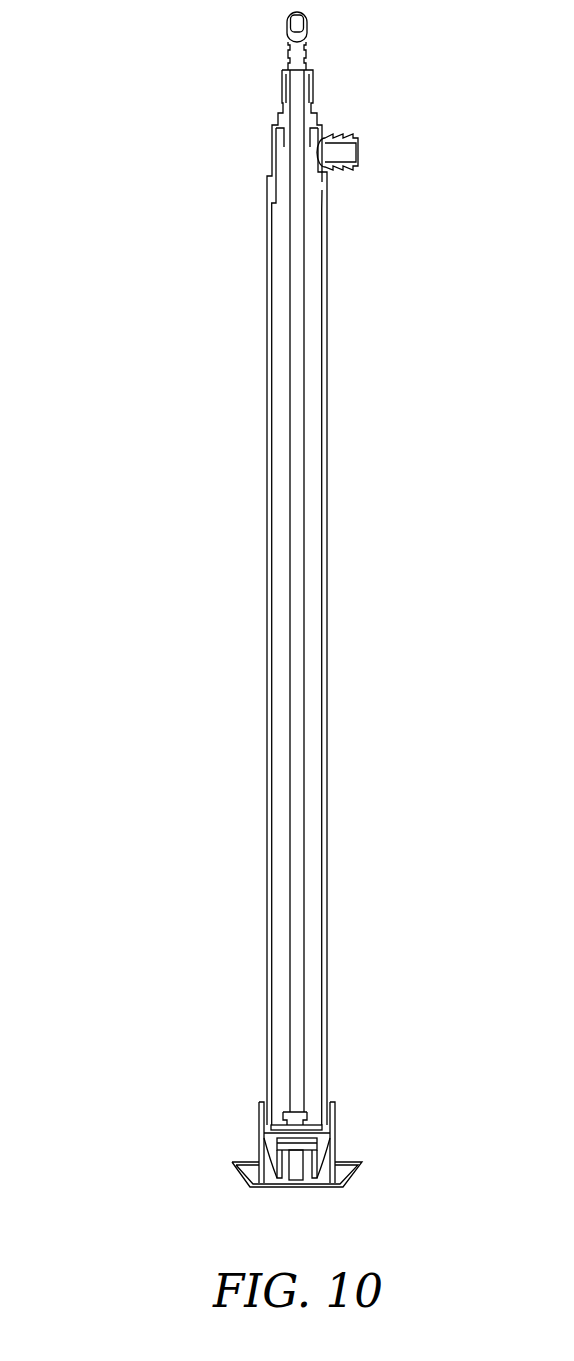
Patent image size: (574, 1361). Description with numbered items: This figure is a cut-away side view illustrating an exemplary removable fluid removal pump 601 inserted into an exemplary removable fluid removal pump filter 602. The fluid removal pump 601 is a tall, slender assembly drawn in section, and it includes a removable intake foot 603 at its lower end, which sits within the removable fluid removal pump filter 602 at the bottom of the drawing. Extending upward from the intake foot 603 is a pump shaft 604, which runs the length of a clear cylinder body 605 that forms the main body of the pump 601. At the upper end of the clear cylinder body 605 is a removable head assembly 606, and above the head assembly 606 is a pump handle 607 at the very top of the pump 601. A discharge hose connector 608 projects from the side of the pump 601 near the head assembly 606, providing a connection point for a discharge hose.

The removable fluid removal pump 601 is at (126, 106).
The removable fluid removal pump filter 602 is at (362, 1165).
The removable intake foot 603 is at (310, 1147).
The pump shaft 604 is at (305, 747).
The clear cylinder body 605 is at (318, 452).
The removable head assembly 606 is at (282, 88).
The pump handle 607 is at (301, 36).
The discharge hose connector 608 is at (352, 152).